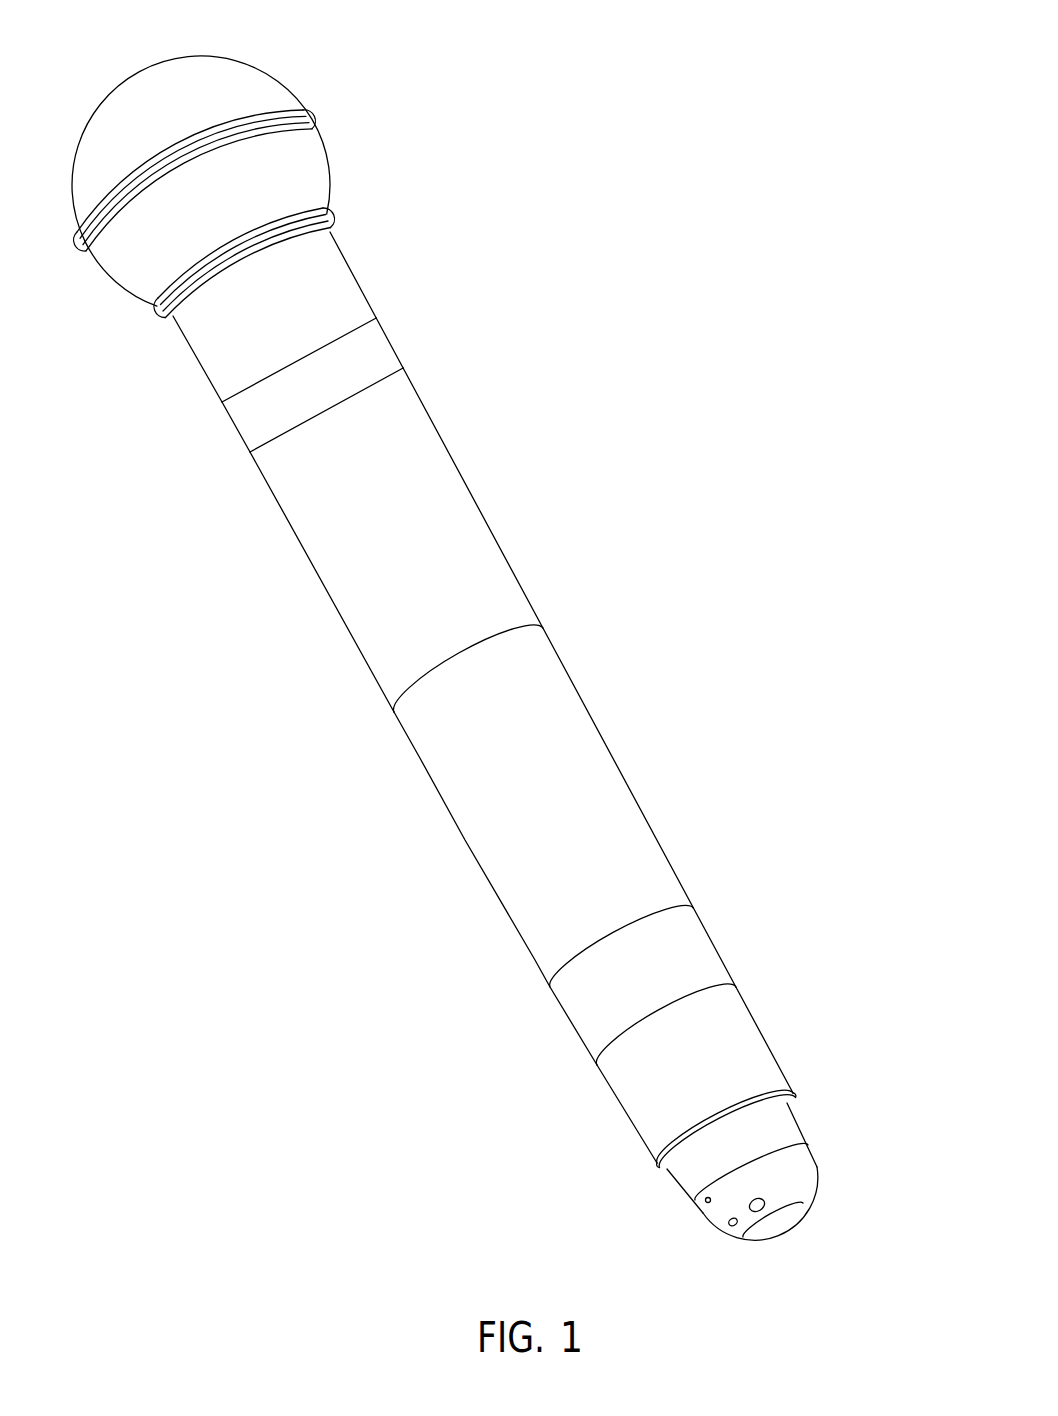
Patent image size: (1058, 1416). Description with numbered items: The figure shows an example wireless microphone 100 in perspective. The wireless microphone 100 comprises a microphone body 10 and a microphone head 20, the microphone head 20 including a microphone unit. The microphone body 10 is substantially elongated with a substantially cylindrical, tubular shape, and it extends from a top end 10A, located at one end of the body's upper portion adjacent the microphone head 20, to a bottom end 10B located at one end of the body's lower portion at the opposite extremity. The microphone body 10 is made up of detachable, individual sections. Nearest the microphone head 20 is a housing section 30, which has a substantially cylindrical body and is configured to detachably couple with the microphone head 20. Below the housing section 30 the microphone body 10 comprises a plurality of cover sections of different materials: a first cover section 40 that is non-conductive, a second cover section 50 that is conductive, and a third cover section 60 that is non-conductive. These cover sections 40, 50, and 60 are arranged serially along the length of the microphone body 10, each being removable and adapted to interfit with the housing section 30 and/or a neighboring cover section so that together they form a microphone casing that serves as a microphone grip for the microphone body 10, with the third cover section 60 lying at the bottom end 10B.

The wireless microphone 100 is at (681, 36).
The microphone body 10 is at (673, 1275).
The top end 10A is at (388, 321).
The bottom end 10B is at (782, 1236).
The microphone head 20 is at (263, 23).
The housing section 30 is at (375, 357).
The first cover section 40 is at (435, 493).
The second cover section 50 is at (592, 738).
The third cover section 60 is at (780, 1157).